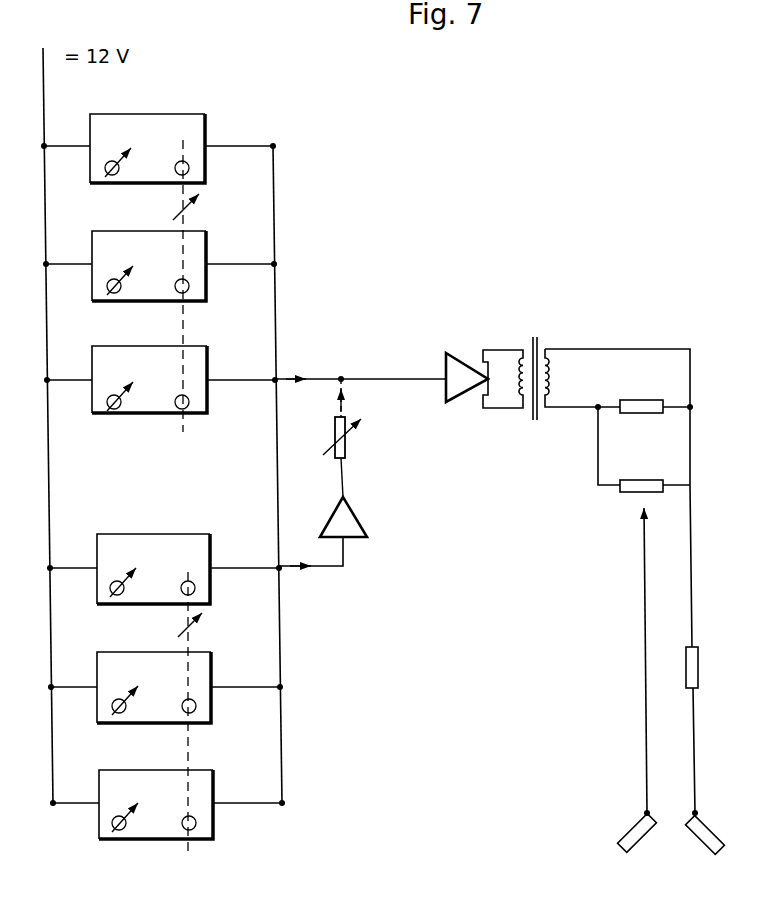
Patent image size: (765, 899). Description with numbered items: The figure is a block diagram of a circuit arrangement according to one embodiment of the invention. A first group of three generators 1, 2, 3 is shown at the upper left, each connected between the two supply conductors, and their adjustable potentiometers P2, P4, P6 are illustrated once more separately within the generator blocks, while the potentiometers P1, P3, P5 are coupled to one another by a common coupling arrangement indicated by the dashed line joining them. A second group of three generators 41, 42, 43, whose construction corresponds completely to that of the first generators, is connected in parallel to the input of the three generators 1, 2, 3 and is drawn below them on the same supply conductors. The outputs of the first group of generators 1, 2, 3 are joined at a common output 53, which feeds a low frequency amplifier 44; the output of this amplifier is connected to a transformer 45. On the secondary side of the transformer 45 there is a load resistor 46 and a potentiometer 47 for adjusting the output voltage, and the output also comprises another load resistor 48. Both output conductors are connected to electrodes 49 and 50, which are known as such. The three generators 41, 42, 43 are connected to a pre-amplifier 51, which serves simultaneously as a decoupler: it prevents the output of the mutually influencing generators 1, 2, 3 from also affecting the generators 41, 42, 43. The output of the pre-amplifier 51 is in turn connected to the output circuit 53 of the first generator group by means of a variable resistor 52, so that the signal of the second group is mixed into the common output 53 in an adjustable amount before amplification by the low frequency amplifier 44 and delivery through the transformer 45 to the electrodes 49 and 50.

The generator 1 is at (197, 120).
The generator 2 is at (197, 253).
The generator 3 is at (198, 377).
The potentiometer P1 is at (190, 169).
The adjustable potentiometer P2 is at (110, 174).
The potentiometer P3 is at (190, 287).
The adjustable potentiometer P4 is at (112, 292).
The potentiometer P5 is at (190, 403).
The adjustable potentiometer P6 is at (112, 409).
The generator 41 is at (197, 547).
The generator 42 is at (202, 664).
The generator 43 is at (202, 792).
The low frequency amplifier 44 is at (460, 370).
The transformer 45 is at (550, 370).
The load resistor 46 is at (640, 409).
The potentiometer 47 is at (632, 488).
The load resistor 48 is at (695, 667).
The electrode 49 is at (632, 828).
The electrode 50 is at (712, 837).
The pre-amplifier 51 is at (353, 518).
The variable resistor 52 is at (346, 445).
The common output 53 is at (373, 376).